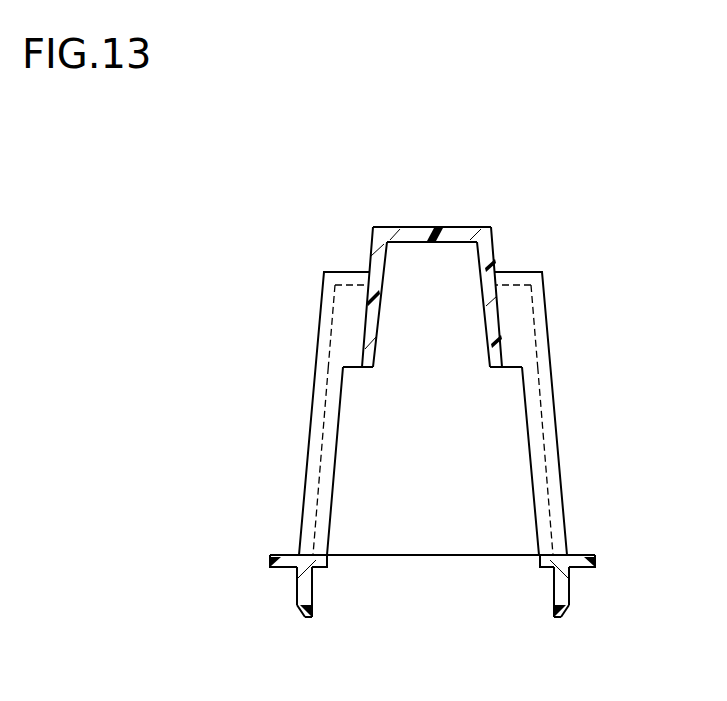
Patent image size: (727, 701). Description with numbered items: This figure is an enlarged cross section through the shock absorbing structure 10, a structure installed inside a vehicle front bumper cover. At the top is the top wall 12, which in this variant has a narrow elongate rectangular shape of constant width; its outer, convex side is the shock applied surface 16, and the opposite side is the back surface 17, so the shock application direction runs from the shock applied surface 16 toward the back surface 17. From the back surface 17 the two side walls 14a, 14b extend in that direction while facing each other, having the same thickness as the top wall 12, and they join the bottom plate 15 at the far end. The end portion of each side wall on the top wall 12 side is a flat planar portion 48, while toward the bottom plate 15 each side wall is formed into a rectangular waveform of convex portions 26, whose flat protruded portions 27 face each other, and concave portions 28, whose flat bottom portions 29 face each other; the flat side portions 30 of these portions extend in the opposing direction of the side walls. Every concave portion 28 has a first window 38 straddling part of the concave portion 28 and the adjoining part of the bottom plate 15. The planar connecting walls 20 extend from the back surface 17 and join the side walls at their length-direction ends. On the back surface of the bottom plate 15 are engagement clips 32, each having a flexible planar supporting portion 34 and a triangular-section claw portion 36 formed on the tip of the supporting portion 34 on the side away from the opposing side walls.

The shock absorbing structure 10 is at (596, 221).
The top wall 12 is at (400, 223).
The side wall 14a is at (566, 473).
The side wall 14b is at (303, 443).
The bottom plate 15 is at (290, 560).
The shock applied surface 16 is at (428, 226).
The back surface 17 is at (417, 244).
The connecting wall 20 is at (423, 522).
The convex portion 26 is at (315, 365).
The protruded portion 27 is at (416, 342).
The concave portion 28 is at (368, 292).
The bottom portion 29 is at (382, 249).
The side portion 30 is at (340, 313).
The engagement clip 32 is at (305, 630).
The supporting portion 34 is at (302, 588).
The claw portion 36 is at (290, 608).
The first window 38 is at (338, 438).
The planar portion 48 is at (360, 247).